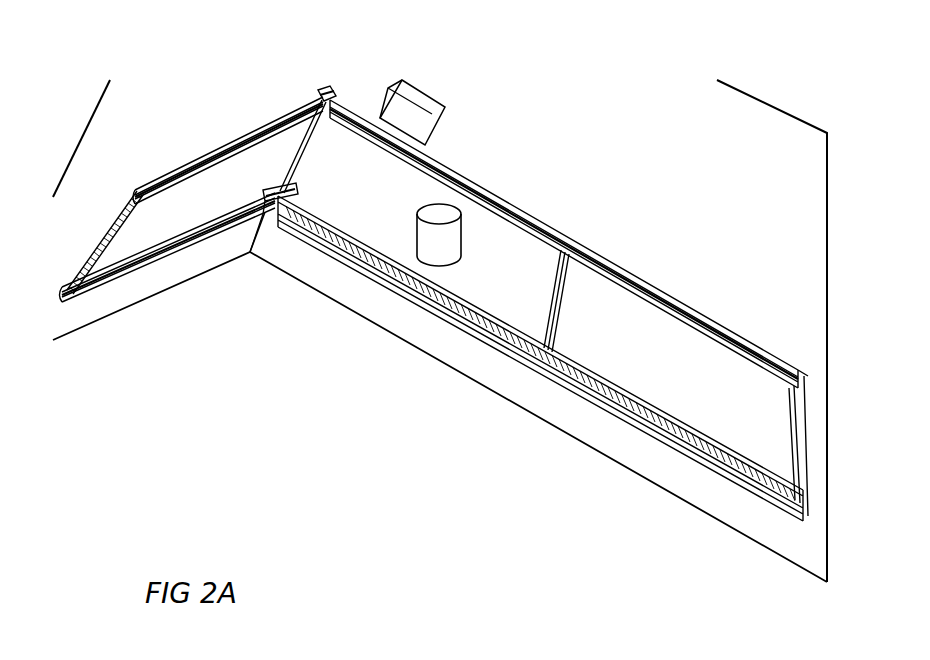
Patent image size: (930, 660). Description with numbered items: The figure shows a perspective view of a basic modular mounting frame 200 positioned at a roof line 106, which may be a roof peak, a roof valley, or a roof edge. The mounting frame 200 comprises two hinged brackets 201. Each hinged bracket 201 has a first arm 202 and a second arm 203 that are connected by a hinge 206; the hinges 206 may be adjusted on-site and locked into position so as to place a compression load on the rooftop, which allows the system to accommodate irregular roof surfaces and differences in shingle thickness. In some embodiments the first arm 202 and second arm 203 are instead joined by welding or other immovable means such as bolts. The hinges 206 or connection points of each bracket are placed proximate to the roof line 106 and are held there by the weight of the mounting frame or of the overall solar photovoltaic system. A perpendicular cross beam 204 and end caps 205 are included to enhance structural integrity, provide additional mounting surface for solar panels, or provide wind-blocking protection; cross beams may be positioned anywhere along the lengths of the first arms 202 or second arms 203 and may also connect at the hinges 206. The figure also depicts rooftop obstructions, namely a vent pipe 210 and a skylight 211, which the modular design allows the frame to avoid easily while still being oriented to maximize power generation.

The modular mounting frame 200 is at (583, 88).
The hinged bracket 201 is at (623, 268).
The first arm 202 is at (697, 312).
The second arm 203 is at (222, 148).
The perpendicular cross beam 204 is at (550, 300).
The end cap 205 is at (797, 427).
The hinge 206 is at (267, 222).
The vent pipe 210 is at (447, 252).
The skylight 211 is at (420, 102).
The roof line 106 is at (300, 164).